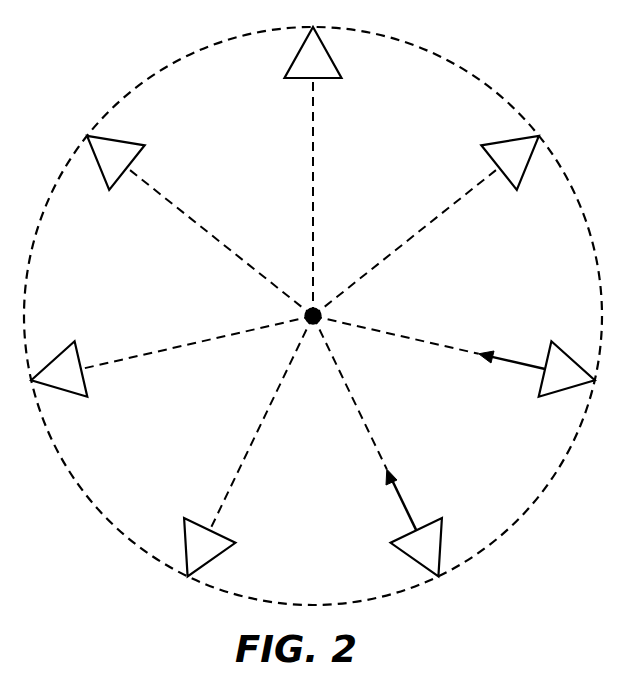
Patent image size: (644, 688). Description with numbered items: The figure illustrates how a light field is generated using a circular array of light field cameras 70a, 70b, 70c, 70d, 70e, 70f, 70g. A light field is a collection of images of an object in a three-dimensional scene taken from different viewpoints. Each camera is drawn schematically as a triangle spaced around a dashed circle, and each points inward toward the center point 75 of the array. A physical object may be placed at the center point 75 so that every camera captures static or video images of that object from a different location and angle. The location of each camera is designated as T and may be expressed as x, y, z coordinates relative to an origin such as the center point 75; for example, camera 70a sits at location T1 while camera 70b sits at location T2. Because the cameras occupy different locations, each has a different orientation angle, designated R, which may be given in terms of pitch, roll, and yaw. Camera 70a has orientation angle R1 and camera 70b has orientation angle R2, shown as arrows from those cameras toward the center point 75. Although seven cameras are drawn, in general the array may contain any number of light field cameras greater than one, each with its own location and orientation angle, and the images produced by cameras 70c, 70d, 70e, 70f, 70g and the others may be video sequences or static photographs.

The center point 75 is at (313, 326).
The light field camera 70a is at (538, 378).
The light field camera 70b is at (402, 530).
The light field camera 70c is at (227, 530).
The light field camera 70d is at (88, 382).
The light field camera 70e is at (137, 158).
The light field camera 70f is at (326, 78).
The light field camera 70g is at (492, 160).
The orientation angle R1 is at (512, 346).
The orientation angle R2 is at (403, 490).
The camera location T1 is at (616, 382).
The camera location T2 is at (438, 596).